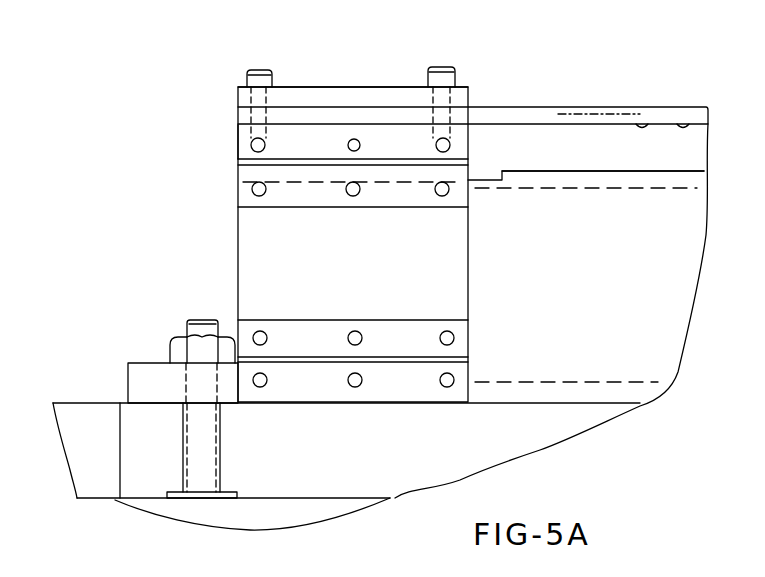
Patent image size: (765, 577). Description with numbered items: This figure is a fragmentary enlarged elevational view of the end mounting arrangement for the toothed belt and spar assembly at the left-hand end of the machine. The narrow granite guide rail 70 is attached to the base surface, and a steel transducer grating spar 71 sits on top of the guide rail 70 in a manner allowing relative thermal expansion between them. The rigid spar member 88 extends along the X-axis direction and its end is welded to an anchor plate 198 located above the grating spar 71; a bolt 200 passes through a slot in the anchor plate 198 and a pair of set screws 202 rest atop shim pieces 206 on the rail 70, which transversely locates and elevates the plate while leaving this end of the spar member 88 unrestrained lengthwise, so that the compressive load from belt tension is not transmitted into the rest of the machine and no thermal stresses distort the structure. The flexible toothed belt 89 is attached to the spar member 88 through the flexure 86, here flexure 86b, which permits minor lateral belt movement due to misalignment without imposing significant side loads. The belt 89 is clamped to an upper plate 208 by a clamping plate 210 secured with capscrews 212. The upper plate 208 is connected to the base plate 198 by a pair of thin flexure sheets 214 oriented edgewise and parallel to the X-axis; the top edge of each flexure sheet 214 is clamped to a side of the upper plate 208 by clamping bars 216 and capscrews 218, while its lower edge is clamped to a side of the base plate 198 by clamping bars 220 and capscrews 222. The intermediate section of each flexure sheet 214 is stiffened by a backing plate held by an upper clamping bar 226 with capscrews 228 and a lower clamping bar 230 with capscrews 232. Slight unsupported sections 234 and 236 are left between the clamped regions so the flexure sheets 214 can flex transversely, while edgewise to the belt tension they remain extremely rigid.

The guide rail 70 is at (135, 506).
The transducer grating spar 71 is at (320, 480).
The flexure 86 is at (404, 230).
The flexure 86b is at (502, 34).
The rigid spar member 88 is at (650, 147).
The toothed belt 89 is at (705, 76).
The anchor plate 198 is at (126, 382).
The bolt 200 is at (170, 345).
The set screw 202 is at (197, 318).
The shim piece 206 is at (222, 502).
The upper plate 208 is at (236, 151).
The clamping plate 210 is at (363, 87).
The capscrew 212 is at (247, 72).
The flexure sheet 214 is at (420, 278).
The clamping bar 216 is at (406, 157).
The capscrew 218 is at (251, 143).
The clamping bar 220 is at (474, 377).
The capscrew 222 is at (262, 387).
The upper clamping bar 226 is at (471, 172).
The capscrew 228 is at (252, 190).
The lower clamping bar 230 is at (472, 335).
The capscrew 232 is at (350, 333).
The unsupported section 234 is at (236, 166).
The unsupported section 236 is at (473, 357).